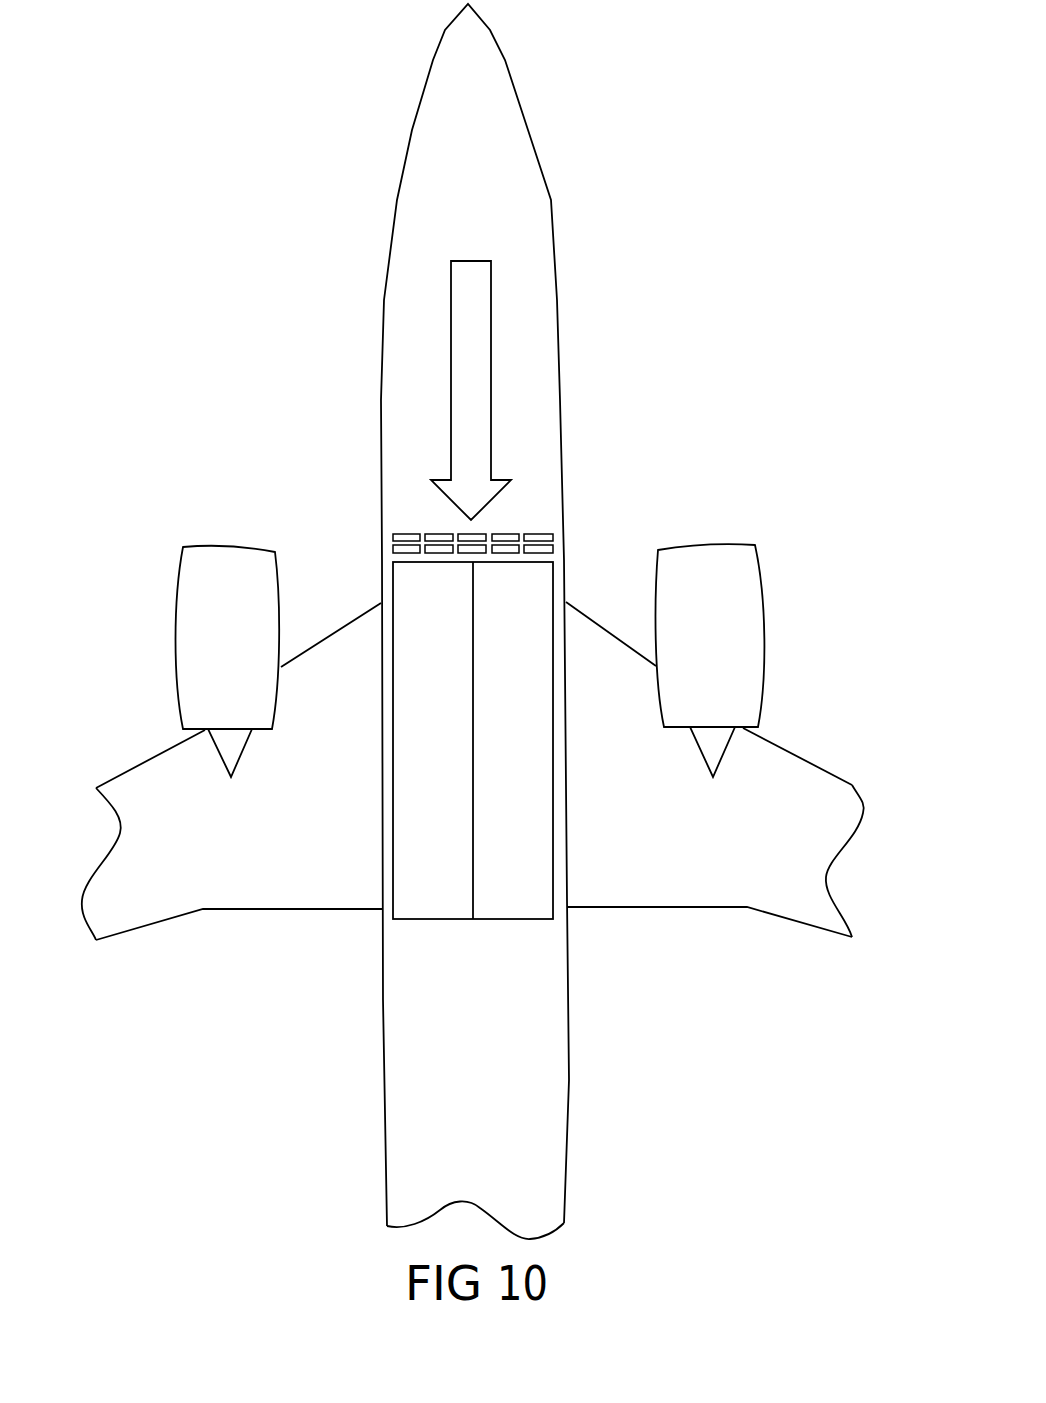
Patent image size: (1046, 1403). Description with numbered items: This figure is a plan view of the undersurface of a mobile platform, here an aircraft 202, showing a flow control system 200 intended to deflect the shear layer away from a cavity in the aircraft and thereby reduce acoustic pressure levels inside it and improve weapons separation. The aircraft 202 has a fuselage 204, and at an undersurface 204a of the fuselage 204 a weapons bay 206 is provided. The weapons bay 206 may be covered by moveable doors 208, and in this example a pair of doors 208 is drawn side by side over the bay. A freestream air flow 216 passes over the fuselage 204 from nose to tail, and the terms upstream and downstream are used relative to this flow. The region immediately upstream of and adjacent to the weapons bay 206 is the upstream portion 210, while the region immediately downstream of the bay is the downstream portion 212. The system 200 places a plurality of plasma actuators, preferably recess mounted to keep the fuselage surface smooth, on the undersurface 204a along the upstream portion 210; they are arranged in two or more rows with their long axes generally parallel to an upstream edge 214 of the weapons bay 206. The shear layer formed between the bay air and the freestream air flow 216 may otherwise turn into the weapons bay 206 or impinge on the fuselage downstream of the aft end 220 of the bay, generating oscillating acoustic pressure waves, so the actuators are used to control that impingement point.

The system 200 is at (528, 511).
The aircraft 202 is at (152, 740).
The fuselage 204 is at (394, 1078).
The undersurface 204a is at (478, 978).
The weapons bay 206 is at (568, 928).
The doors 208 is at (453, 753).
The upstream portion 210 is at (397, 554).
The downstream portion 212 is at (429, 926).
The upstream edge 214 is at (512, 562).
The freestream air flow 216 is at (481, 343).
The aft end 220 is at (509, 913).